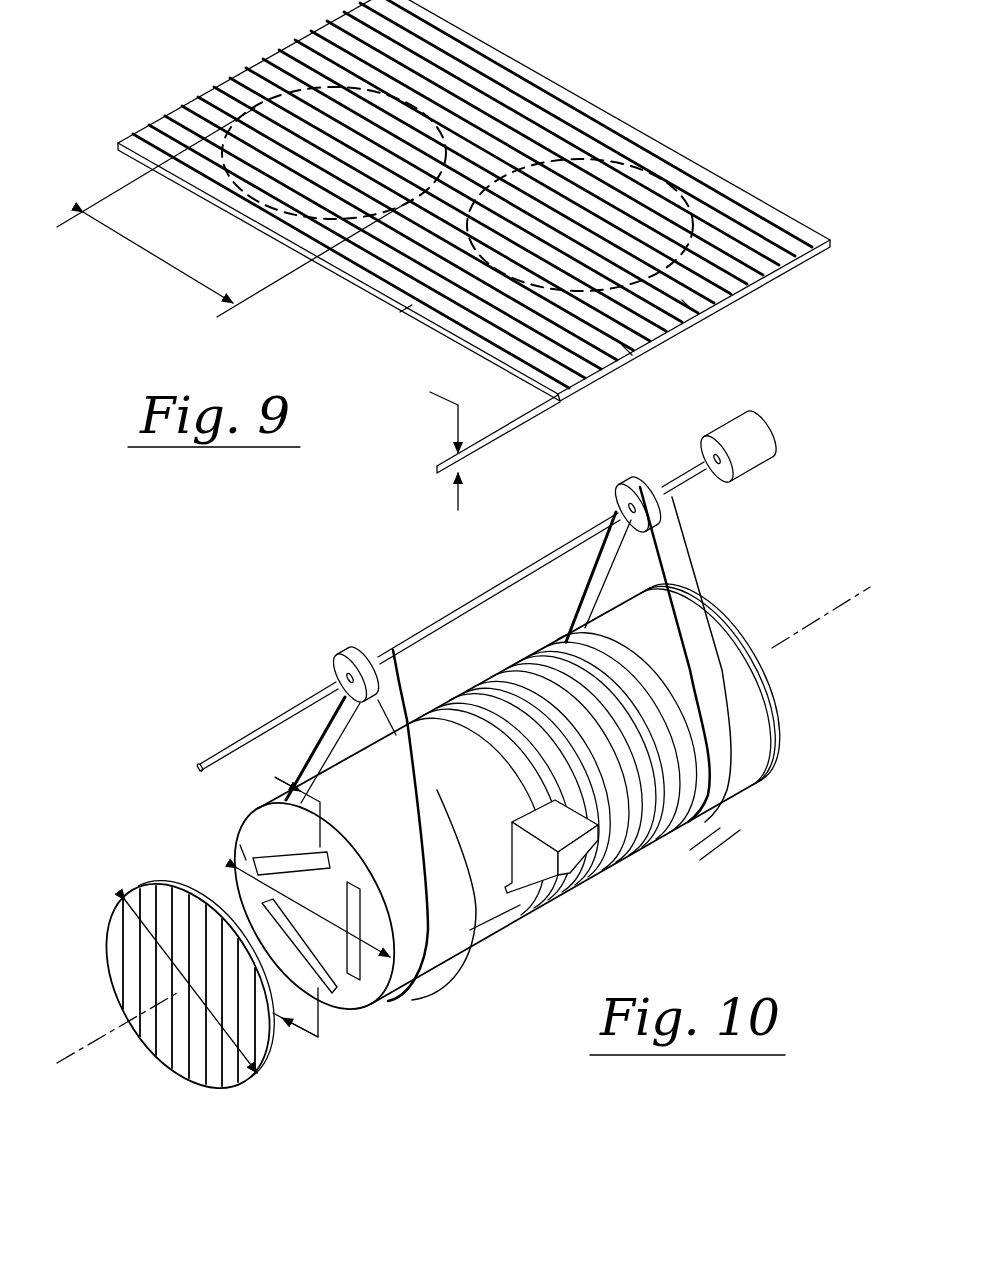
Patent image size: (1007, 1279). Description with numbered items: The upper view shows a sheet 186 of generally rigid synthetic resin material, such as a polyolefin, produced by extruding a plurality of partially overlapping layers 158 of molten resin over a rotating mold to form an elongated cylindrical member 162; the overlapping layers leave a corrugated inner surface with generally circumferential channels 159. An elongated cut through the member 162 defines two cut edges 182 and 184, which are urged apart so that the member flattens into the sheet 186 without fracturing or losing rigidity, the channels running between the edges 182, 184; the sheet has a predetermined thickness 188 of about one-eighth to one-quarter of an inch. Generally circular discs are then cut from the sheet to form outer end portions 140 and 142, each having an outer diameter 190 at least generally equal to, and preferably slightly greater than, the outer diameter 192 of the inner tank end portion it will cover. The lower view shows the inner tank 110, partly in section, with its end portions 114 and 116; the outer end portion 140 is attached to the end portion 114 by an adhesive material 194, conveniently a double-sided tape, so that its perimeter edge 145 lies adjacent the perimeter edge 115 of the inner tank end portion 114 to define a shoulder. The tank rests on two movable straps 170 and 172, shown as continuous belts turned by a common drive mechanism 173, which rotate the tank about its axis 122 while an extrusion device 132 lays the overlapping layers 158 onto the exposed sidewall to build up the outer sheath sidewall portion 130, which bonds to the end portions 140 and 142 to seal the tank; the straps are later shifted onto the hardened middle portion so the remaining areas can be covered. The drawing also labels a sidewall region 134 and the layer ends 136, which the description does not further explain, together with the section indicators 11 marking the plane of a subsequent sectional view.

In FIG. 10, the inner tank 110 is at (650, 627).
In FIG. 10, the inner tank end portion 114 is at (248, 843).
In FIG. 10, the perimeter edge of inner tank end portion 115 is at (345, 1013).
In FIG. 10, the inner tank end portion 116 is at (772, 733).
In FIG. 10, the axis of rotation 122 is at (823, 612).
In FIG. 10, the outer sheath sidewall portion 130 is at (513, 667).
In FIG. 10, the extrusion device 132 is at (573, 853).
In FIG. 10, the drum surface 134 is at (493, 915).
In FIG. 10, the rib ends 136 is at (690, 850).
In FIG. 9, the outer end portion 140 is at (300, 78).
In FIG. 10, the outer end portion 140 is at (190, 1073).
In FIG. 9, the outer end portion 142 is at (640, 163).
In FIG. 10, the outer end portion 142 is at (780, 708).
In FIG. 10, the perimeter edge of outer end portion 145 is at (168, 882).
In FIG. 9, the partially overlapping layers of molten synthetic resin material 158 is at (628, 348).
In FIG. 9, the circumferential channels 159 is at (688, 305).
In FIG. 9, the cylindrical member 162 is at (400, 312).
In FIG. 10, the strap 170 is at (393, 698).
In FIG. 10, the strap 172 is at (688, 548).
In FIG. 10, the drive mechanism 173 is at (755, 458).
In FIG. 9, the cut edge 182 is at (593, 383).
In FIG. 9, the cut edge 184 is at (222, 82).
In FIG. 9, the sheet 186 is at (724, 163).
In FIG. 9, the thickness 188 is at (420, 443).
In FIG. 9, the outer diameter of outer end portion 190 is at (183, 270).
In FIG. 10, the outer diameter of outer end portion 190 is at (173, 965).
In FIG. 10, the outer diameter of inner tank end portion 192 is at (380, 1003).
In FIG. 10, the adhesive material 194 is at (283, 857).
In FIG. 10, the section line 11- 11 is at (311, 918).